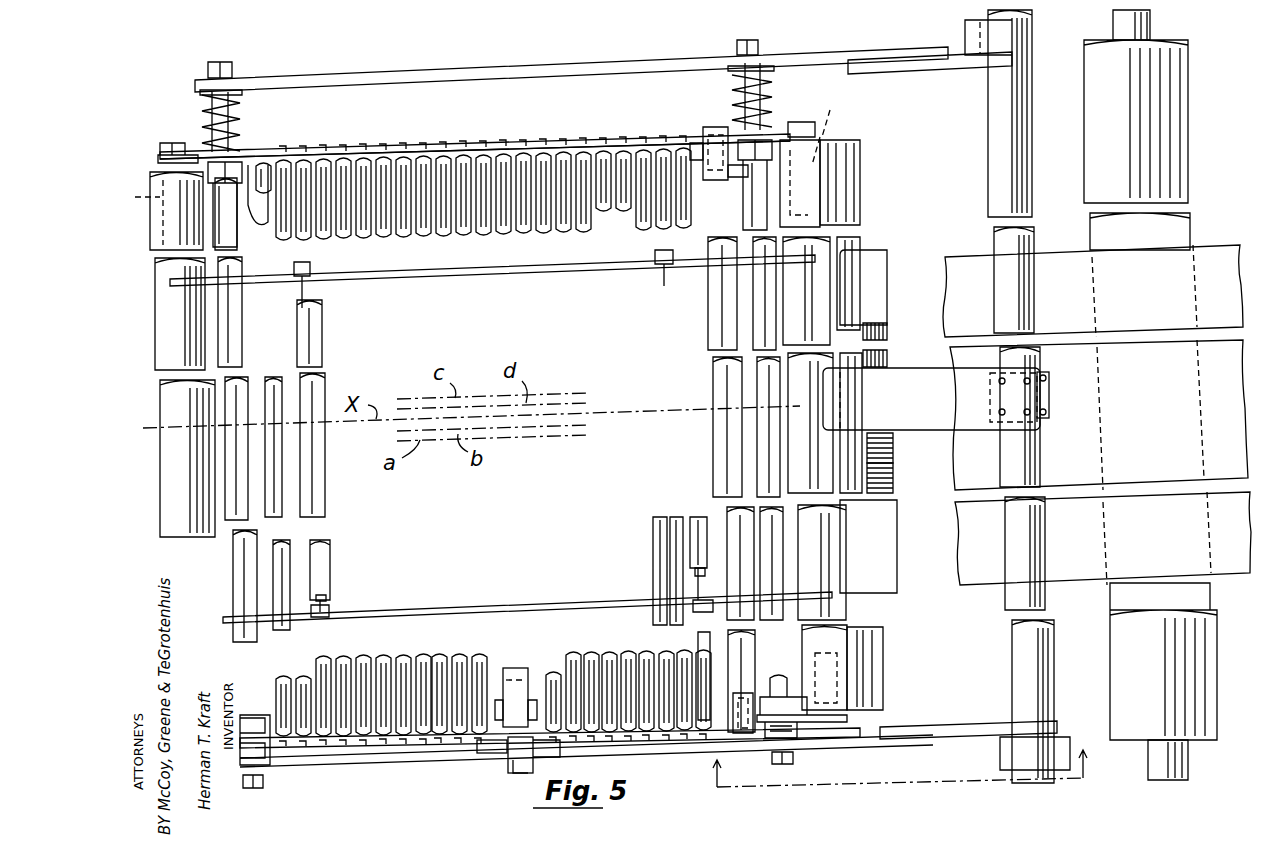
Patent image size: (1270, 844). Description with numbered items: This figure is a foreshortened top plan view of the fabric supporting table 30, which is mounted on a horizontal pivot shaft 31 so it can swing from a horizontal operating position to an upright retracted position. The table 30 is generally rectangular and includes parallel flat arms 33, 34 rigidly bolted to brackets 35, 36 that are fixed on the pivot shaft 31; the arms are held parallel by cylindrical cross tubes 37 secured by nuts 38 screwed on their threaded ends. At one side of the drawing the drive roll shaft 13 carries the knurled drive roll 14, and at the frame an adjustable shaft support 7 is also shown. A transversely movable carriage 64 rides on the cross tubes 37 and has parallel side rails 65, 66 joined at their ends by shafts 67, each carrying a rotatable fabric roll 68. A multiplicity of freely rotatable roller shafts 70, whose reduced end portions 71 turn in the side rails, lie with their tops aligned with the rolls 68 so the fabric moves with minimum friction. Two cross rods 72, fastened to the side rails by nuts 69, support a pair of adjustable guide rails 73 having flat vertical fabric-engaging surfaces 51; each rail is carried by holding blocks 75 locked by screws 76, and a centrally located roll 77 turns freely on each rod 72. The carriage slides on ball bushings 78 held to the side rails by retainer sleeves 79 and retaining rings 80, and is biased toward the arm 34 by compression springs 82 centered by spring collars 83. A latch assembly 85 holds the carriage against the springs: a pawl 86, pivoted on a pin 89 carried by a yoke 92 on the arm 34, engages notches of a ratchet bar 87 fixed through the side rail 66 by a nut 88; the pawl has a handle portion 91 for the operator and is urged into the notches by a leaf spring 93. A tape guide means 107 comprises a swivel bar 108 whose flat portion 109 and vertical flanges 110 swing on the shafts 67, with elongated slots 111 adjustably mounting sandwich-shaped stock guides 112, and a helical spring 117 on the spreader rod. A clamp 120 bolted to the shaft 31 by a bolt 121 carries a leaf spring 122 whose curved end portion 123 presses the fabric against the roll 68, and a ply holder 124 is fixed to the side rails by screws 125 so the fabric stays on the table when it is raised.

The adjustable shaft support 7 is at (899, 776).
The drive roll shaft 13 is at (1150, 25).
The drive roll 14 is at (1188, 132).
The fabric supporting table 30 is at (166, 100).
The pivot shaft 31 is at (1023, 175).
The arm 33 is at (555, 63).
The arm 34 is at (875, 747).
The bracket 35 is at (1035, 60).
The bracket 36 is at (990, 727).
The cross tube 37 is at (237, 125).
The nut 38 is at (232, 70).
The fabric-engaging surface 51 is at (489, 274).
The carriage 64 is at (895, 667).
The side rail 65 is at (465, 150).
The side rail 66 is at (397, 744).
The shaft 67 is at (484, 165).
The fabric roll 68 is at (162, 480).
The nut 69 is at (300, 152).
The roller shaft 70 is at (262, 215).
The reduced end portion 71 is at (440, 150).
The cross rod 72 is at (310, 178).
The adjustable guide rail 73 is at (405, 283).
The guide-rail holding block 75 is at (306, 268).
The locking screw 76 is at (660, 274).
The roll 77 is at (320, 362).
The ball bushing 78 is at (752, 183).
The bearing retainer sleeve 79 is at (778, 676).
The retaining ring 80 is at (733, 177).
The compression spring 82 is at (212, 96).
The spring collar 83 is at (240, 95).
The clamp assembly 85 is at (518, 649).
The pawl 86 is at (504, 690).
The ratchet 87 is at (510, 668).
The nut 88 is at (525, 773).
The pivot pin 89 is at (530, 694).
The handle portion 91 is at (505, 778).
The supporting bracket 92 is at (565, 758).
The leaf spring 93 is at (485, 765).
The tape guide means 107 is at (884, 576).
The swivel bar 108 is at (865, 366).
The flat rectangular portion 109 is at (890, 450).
The vertical flange portion 110 is at (834, 140).
The elongated slot 111 is at (862, 187).
The stock guide 112 is at (878, 255).
The helical spring 117 is at (890, 475).
The clamp 120 is at (1050, 398).
The bolt 121 is at (1043, 373).
The leaf spring 122 is at (945, 380).
The curved end portion 123 is at (840, 395).
The ply holder 124 is at (725, 455).
The screw 125 is at (712, 125).